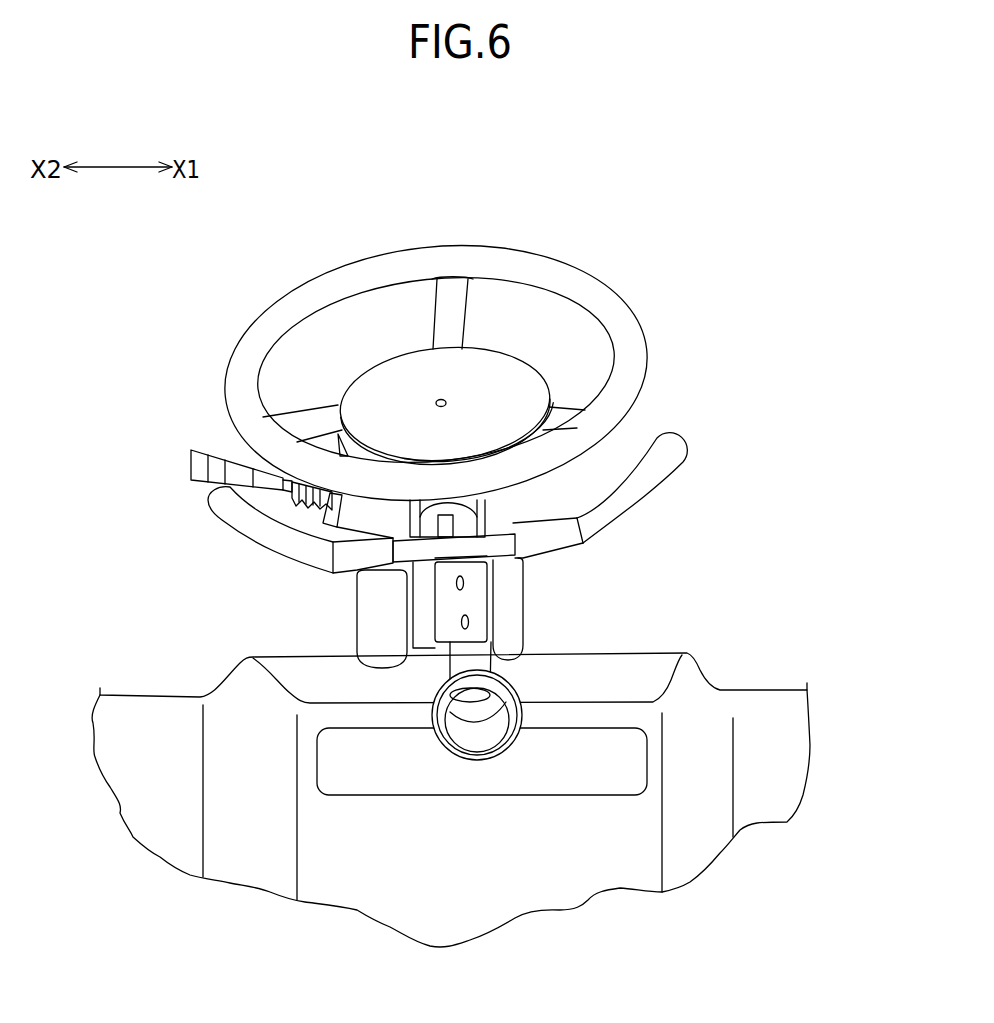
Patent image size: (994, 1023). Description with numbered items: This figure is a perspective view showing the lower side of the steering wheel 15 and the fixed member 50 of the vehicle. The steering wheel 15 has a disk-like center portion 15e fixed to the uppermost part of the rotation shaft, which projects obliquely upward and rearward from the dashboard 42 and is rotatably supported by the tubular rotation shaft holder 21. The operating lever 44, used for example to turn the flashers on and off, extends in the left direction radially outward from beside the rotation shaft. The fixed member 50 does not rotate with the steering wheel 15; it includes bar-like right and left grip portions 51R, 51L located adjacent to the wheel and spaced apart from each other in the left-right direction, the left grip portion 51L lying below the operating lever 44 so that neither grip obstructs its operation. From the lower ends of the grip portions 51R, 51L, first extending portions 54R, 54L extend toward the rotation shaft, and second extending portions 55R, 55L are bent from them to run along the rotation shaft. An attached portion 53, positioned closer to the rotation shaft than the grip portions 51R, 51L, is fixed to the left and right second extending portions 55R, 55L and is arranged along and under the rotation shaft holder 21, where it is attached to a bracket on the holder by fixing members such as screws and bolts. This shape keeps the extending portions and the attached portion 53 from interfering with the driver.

The steering wheel 15 is at (604, 268).
The center portion 15e is at (491, 374).
The operating lever 44 is at (203, 460).
The fixed member 50 is at (278, 571).
The left grip portion 51L is at (252, 530).
The right grip portion 51R is at (638, 501).
The left first extending portion 54L is at (368, 553).
The right first extending portion 54R is at (571, 540).
The left second extending portion 55L is at (422, 622).
The right second extending portion 55R is at (512, 617).
The attached portion 53 is at (447, 634).
The dashboard 42 is at (645, 678).
The rotation shaft holder 21 is at (468, 688).